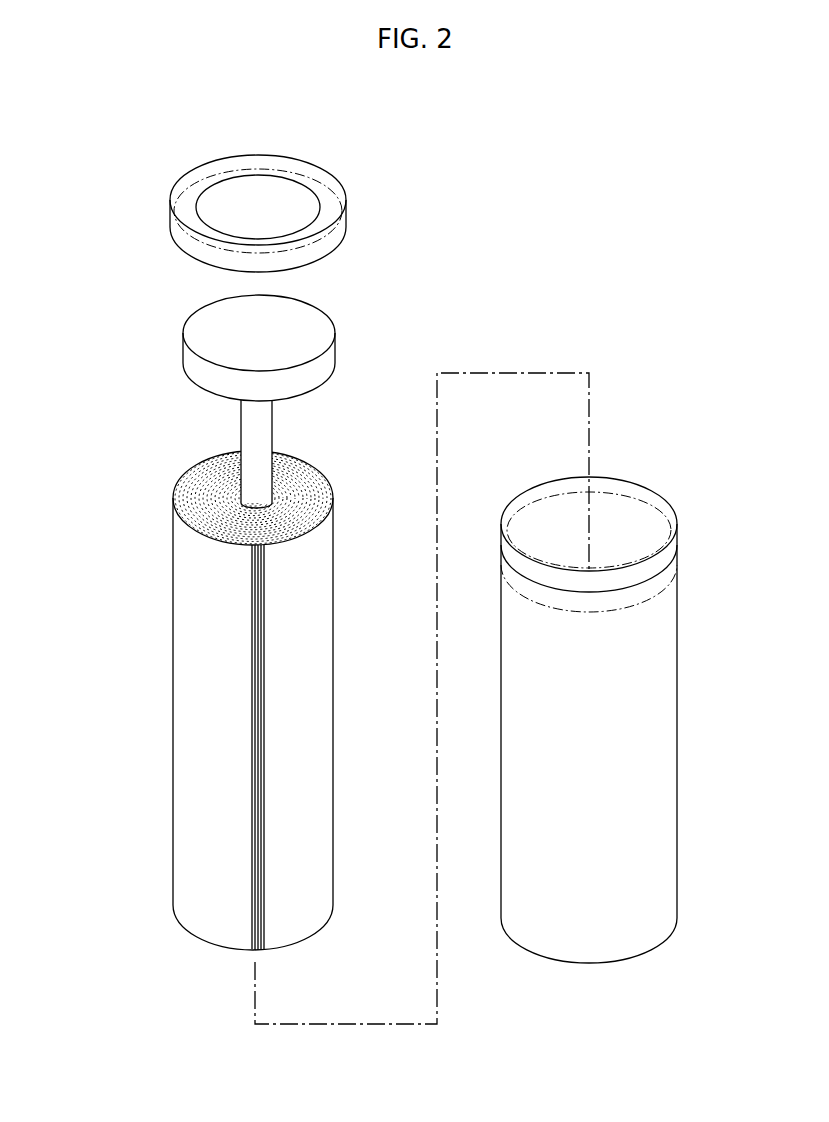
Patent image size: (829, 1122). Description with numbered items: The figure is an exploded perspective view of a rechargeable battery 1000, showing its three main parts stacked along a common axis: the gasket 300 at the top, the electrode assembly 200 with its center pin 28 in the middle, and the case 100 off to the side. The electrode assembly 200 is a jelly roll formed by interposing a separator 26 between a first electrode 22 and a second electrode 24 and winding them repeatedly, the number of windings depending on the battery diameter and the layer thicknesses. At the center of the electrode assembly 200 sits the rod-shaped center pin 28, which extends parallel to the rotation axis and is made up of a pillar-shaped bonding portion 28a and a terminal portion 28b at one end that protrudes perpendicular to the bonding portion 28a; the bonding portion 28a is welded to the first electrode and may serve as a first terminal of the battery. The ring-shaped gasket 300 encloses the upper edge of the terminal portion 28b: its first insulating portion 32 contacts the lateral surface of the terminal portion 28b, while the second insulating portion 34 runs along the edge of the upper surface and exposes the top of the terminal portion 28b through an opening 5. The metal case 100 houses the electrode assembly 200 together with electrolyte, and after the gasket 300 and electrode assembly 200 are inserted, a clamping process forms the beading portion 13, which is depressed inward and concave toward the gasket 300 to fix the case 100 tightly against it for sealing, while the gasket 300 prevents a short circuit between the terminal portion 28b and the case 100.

The rechargeable battery 1000 is at (420, 90).
The gasket 300 is at (118, 189).
The second insulating portion 34 is at (182, 197).
The first insulating portion 32 is at (183, 238).
The opening 5 is at (253, 195).
The center pin 28 is at (369, 395).
The bonding portion 28a is at (272, 435).
The terminal portion 28b is at (313, 385).
The electrode assembly 200 is at (337, 563).
The second electrode 24 is at (258, 640).
The first electrode 22 is at (263, 708).
The separator 26 is at (262, 755).
The case 100 is at (667, 748).
The beading portion 13 is at (680, 553).